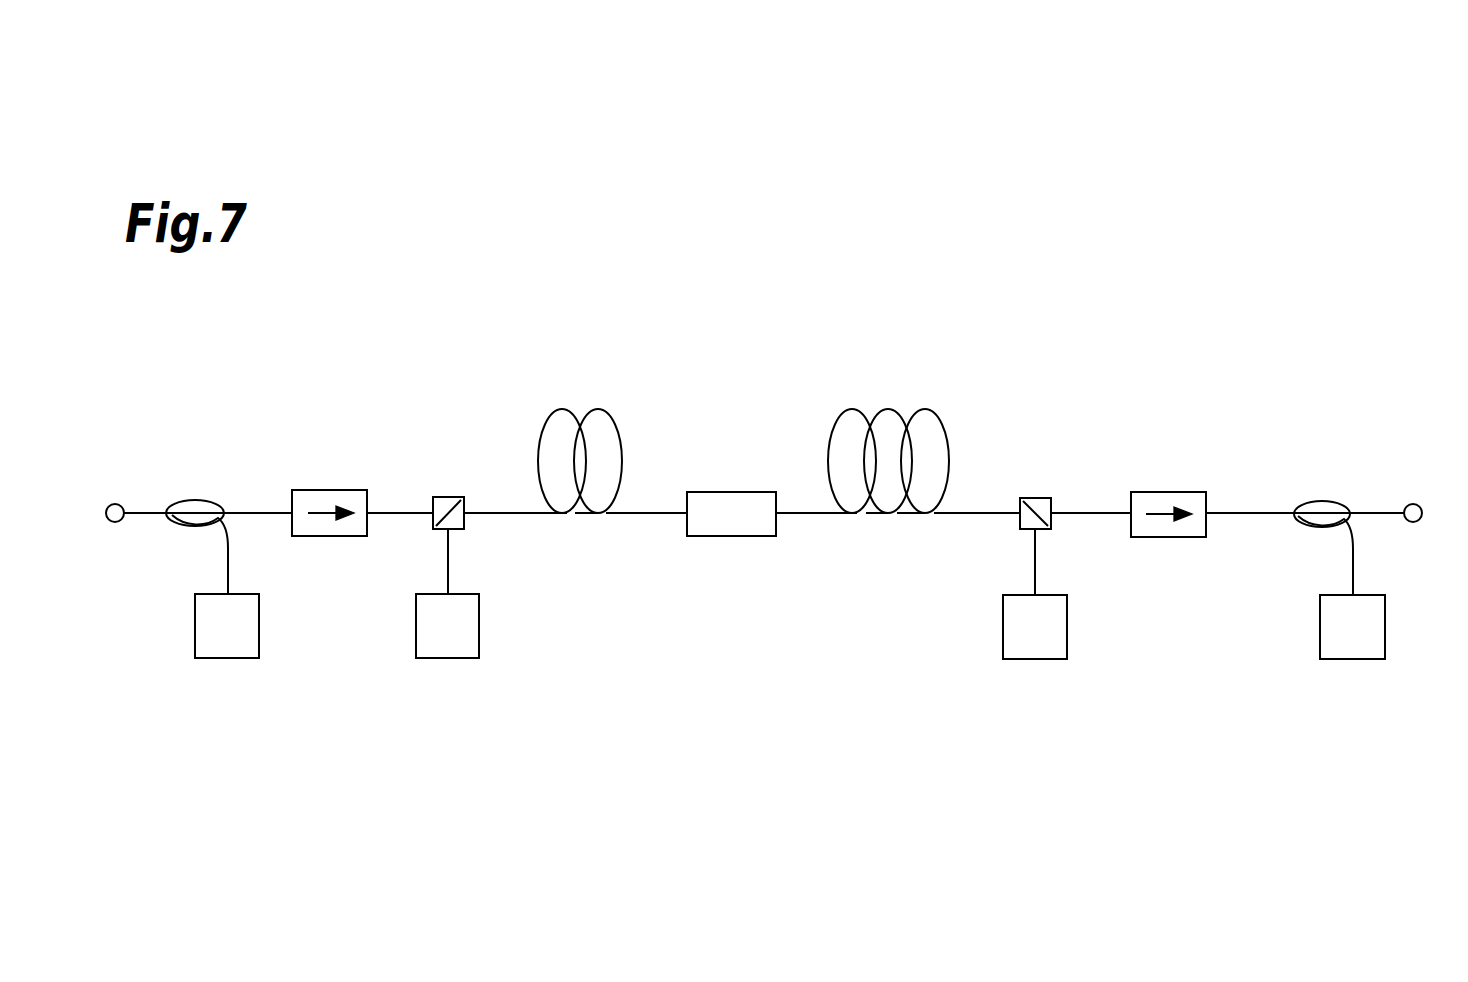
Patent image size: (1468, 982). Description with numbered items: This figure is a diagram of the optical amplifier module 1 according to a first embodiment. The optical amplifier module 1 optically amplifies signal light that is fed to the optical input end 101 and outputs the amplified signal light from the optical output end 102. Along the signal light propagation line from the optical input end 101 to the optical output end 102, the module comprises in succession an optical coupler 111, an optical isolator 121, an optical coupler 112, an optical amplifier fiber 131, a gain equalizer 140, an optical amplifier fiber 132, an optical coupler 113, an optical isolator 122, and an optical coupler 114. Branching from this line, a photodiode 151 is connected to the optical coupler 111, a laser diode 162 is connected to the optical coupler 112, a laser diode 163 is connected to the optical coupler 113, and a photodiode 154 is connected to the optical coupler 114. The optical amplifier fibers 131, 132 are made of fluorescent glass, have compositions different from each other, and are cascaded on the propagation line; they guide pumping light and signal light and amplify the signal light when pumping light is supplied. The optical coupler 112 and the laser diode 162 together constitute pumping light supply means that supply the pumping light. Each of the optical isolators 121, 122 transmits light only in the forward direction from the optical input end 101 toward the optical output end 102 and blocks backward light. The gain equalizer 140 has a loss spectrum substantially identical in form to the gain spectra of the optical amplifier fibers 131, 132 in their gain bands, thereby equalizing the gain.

The optical amplifier module 1 is at (1064, 353).
The optical input end 101 is at (115, 503).
The optical output end 102 is at (1413, 504).
The optical coupler 111 is at (195, 500).
The optical coupler 112 is at (449, 497).
The optical coupler 113 is at (1037, 498).
The optical coupler 114 is at (1322, 501).
The optical isolator 121 is at (329, 490).
The optical isolator 122 is at (1170, 492).
The optical amplifier fiber 131 is at (598, 408).
The optical amplifier fiber 132 is at (925, 408).
The gain equalizer 140 is at (733, 492).
The photodiode 151 is at (227, 659).
The photodiode 154 is at (1353, 660).
The laser diode 162 is at (448, 659).
The laser diode 163 is at (1035, 660).